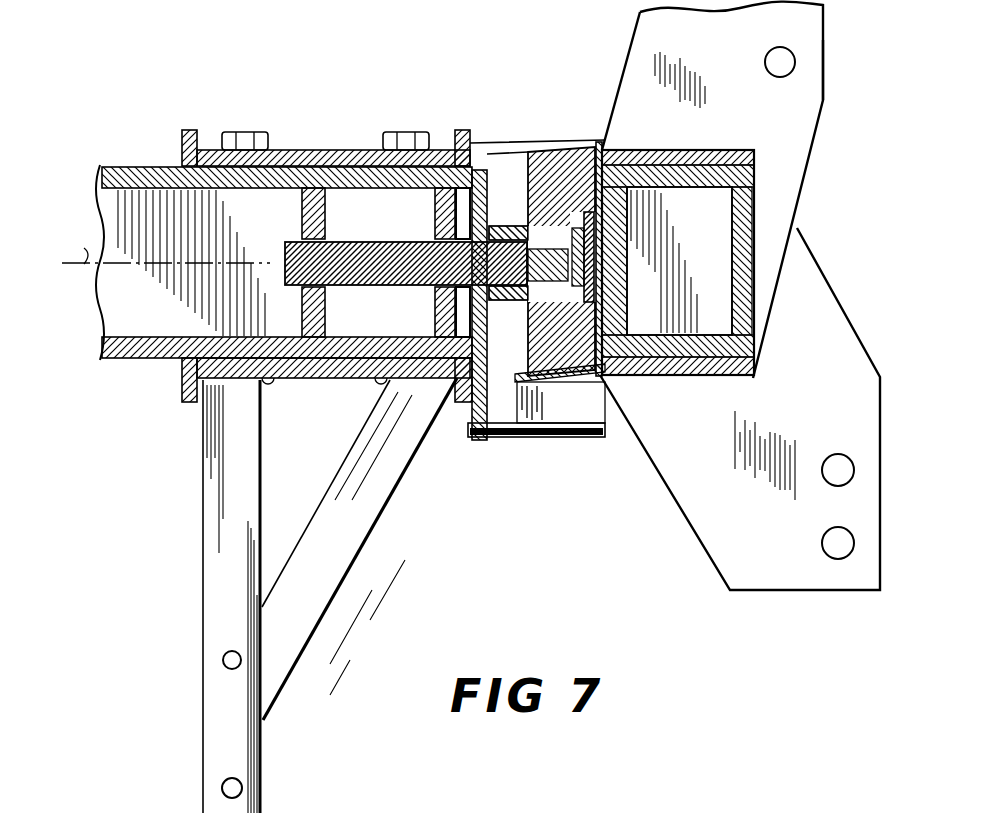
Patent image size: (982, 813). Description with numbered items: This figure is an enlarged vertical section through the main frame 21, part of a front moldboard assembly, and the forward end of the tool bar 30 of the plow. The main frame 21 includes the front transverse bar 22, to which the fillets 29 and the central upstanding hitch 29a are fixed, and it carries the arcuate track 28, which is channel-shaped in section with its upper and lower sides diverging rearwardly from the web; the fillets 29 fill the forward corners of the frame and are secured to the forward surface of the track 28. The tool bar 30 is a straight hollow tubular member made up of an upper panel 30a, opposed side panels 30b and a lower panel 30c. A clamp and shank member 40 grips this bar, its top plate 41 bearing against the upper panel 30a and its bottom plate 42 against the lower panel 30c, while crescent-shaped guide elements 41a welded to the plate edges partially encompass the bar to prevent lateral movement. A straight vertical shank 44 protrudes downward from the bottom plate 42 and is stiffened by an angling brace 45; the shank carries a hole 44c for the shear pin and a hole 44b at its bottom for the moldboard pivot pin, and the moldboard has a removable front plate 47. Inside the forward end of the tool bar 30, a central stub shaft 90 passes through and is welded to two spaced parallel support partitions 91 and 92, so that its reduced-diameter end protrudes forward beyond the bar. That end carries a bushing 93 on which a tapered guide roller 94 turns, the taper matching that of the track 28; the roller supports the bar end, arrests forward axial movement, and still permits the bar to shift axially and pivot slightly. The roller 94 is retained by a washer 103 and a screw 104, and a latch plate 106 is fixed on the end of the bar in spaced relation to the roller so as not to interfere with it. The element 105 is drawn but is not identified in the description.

The main frame 21 is at (650, 162).
The front transverse bar 22 is at (752, 190).
The arcuate track 28 is at (529, 150).
The fillets 29 is at (716, 148).
The central upstanding hitch 29a is at (828, 108).
The tool bar 30 is at (100, 163).
The upper panel 30a is at (120, 192).
The side panels 30b is at (120, 282).
The lower panel 30c is at (120, 344).
The clamp and shank member 40 is at (288, 150).
The top plate 41 is at (332, 150).
The crescent-shaped guide elements 41a is at (185, 142).
The bottom plate 42 is at (306, 378).
The shank 44 is at (206, 526).
The hole 44b is at (222, 788).
The hole 44c is at (222, 660).
The angling brace 45 is at (342, 578).
The front plate 47 is at (468, 400).
The stub shaft 90 is at (283, 244).
The support partition 91 is at (324, 212).
The support partition 92 is at (436, 317).
The bushing 93 is at (520, 228).
The guide roller 94 is at (566, 148).
The washer 103 is at (588, 222).
The screw 104 is at (588, 244).
The bottom strip 105 is at (540, 382).
The latch plate 106 is at (494, 438).